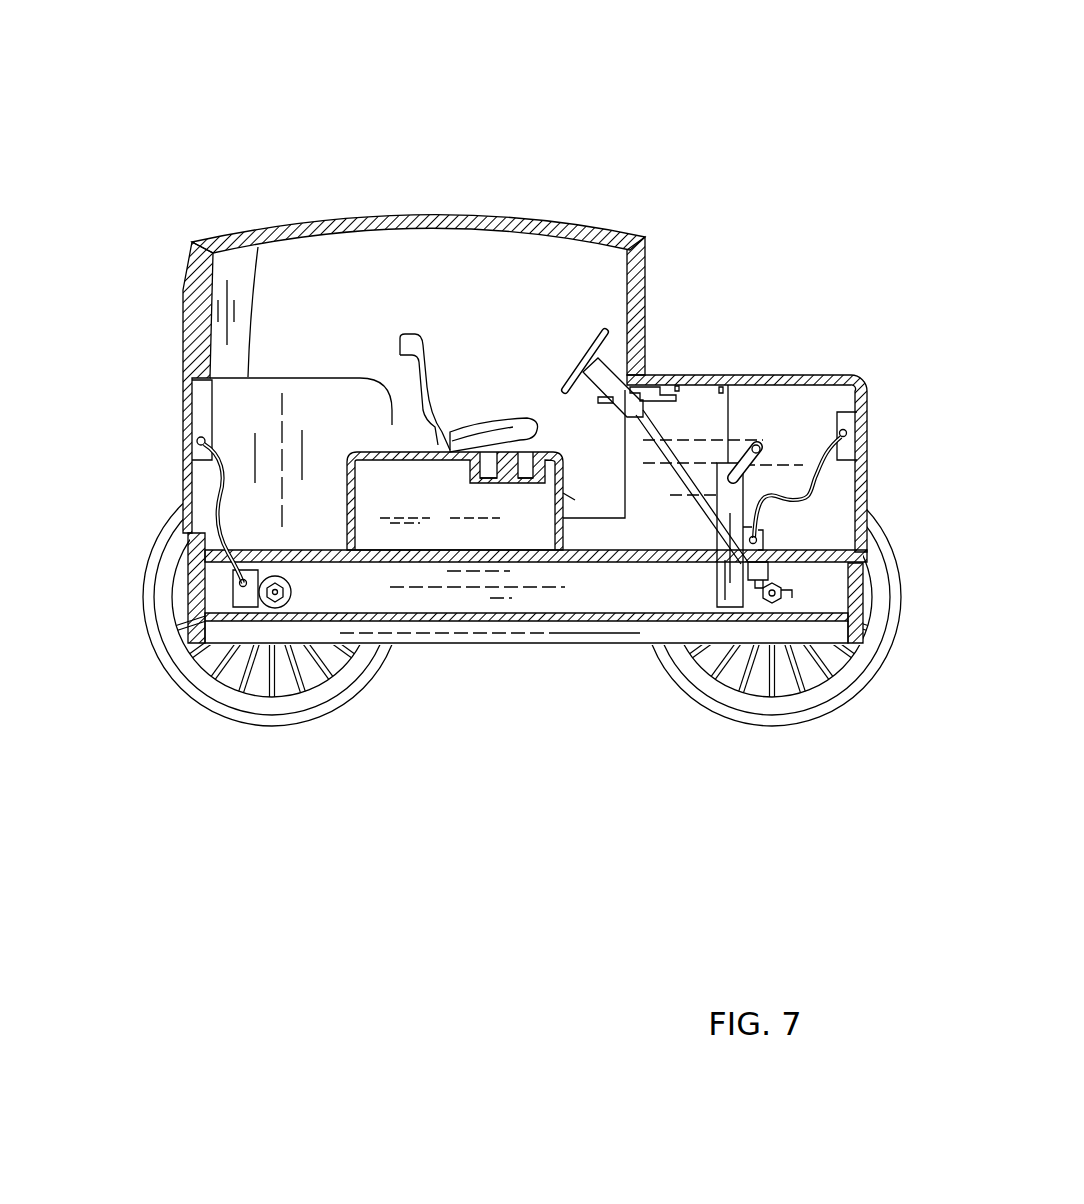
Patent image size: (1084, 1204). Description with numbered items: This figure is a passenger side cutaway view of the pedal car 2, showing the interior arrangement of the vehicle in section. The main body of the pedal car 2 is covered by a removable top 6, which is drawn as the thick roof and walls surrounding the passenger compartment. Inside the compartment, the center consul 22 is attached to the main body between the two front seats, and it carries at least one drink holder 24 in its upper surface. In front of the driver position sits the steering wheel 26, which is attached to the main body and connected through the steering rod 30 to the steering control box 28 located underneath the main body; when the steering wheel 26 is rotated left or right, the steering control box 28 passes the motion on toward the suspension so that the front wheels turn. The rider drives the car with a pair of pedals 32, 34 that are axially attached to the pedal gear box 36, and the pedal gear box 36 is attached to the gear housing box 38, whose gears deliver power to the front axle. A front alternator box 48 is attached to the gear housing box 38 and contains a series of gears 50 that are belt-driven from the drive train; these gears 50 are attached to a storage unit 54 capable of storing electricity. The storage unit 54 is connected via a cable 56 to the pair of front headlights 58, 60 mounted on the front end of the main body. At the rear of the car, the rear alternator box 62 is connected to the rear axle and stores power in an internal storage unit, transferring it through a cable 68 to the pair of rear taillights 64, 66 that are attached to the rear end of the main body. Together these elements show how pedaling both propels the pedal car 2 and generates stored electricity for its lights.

The pedal car 2 is at (622, 88).
The removable top 6 is at (573, 220).
The center consul 22 is at (437, 517).
The drink holder 24 is at (490, 460).
The steering wheel 26 is at (606, 333).
The steering control box 28 is at (750, 583).
The steering rod 30 is at (645, 445).
The pedal 32 is at (760, 443).
The pedal 34 is at (735, 482).
The pedal gear box 36 is at (723, 568).
The gear housing box 38 is at (755, 606).
The front alternator box 48 is at (862, 533).
The gears 50 is at (763, 538).
The storage unit 54 is at (862, 533).
The cable 56 is at (820, 470).
The front headlight 58 is at (902, 427).
The front headlight 60 is at (850, 419).
The rear alternator box 62 is at (246, 604).
The rear taillight 64 is at (147, 483).
The rear taillight 66 is at (190, 430).
The cable 68 is at (192, 540).